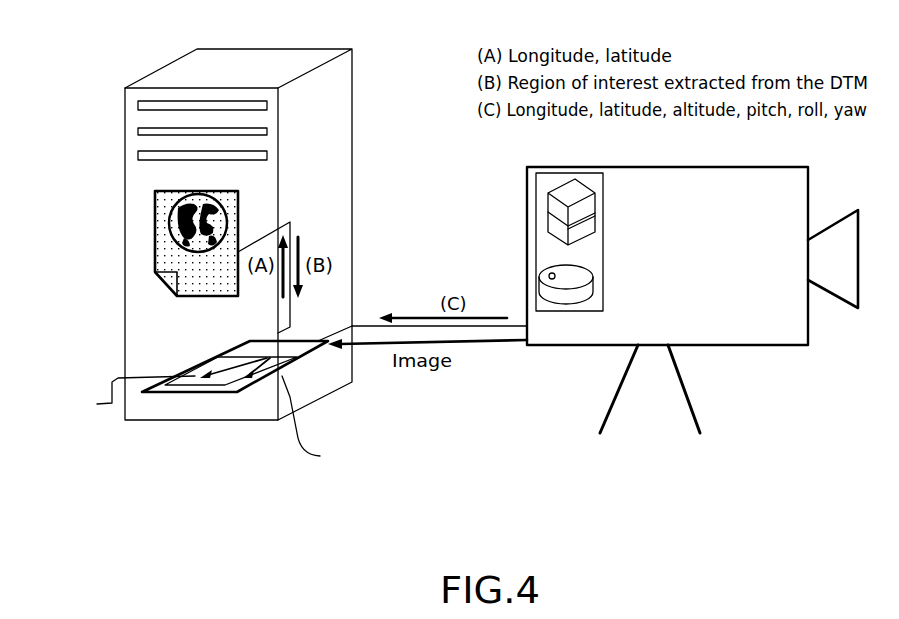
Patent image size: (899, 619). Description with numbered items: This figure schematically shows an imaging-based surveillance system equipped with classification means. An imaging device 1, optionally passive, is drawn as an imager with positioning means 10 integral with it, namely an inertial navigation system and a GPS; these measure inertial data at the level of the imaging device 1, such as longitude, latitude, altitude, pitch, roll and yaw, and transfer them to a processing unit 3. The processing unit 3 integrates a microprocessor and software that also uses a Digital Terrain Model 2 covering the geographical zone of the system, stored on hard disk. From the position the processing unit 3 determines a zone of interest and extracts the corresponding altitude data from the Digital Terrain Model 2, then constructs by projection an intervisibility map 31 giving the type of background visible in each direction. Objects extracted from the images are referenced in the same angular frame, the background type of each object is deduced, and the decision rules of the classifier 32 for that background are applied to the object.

The imaging device 1 is at (660, 288).
The Digital Terrain Model 2 is at (155, 237).
The processing unit 3 is at (195, 368).
The positioning means 10 is at (527, 187).
The intervisibility map 31 is at (312, 360).
The classifier 32 is at (232, 389).